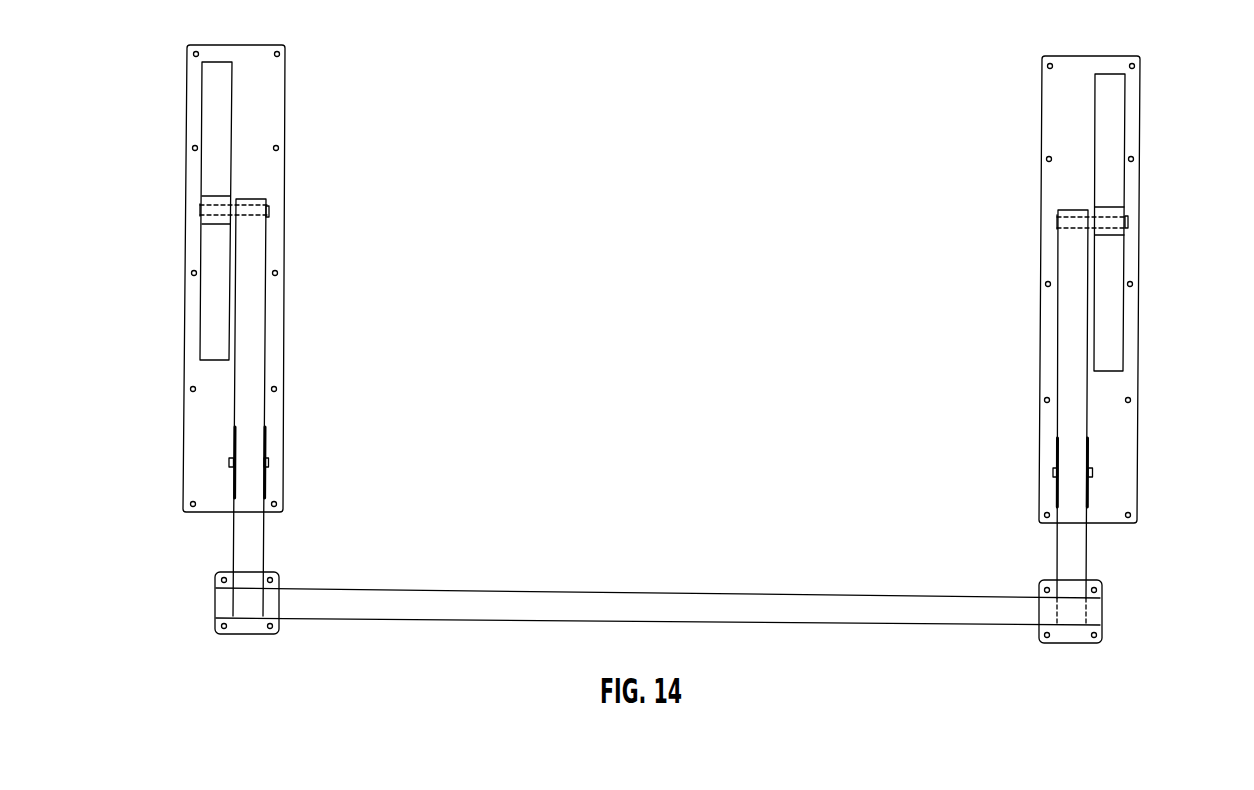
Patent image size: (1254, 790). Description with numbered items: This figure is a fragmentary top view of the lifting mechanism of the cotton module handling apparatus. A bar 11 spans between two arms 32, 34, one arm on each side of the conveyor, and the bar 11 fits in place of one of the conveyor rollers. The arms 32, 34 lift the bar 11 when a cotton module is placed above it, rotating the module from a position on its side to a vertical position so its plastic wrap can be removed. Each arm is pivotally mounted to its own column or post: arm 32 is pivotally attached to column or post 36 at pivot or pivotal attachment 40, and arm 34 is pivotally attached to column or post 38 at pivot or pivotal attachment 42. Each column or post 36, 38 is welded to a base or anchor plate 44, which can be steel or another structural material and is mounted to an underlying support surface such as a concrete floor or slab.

The bar 11 is at (484, 612).
The arm 32 is at (1073, 382).
The arm 34 is at (255, 255).
The column or post 36 is at (1110, 207).
The column or post 38 is at (217, 195).
The pivot or pivotal attachment 40 is at (1125, 222).
The pivot or pivotal attachment 42 is at (270, 212).
The base or anchor plate 44 is at (282, 82).